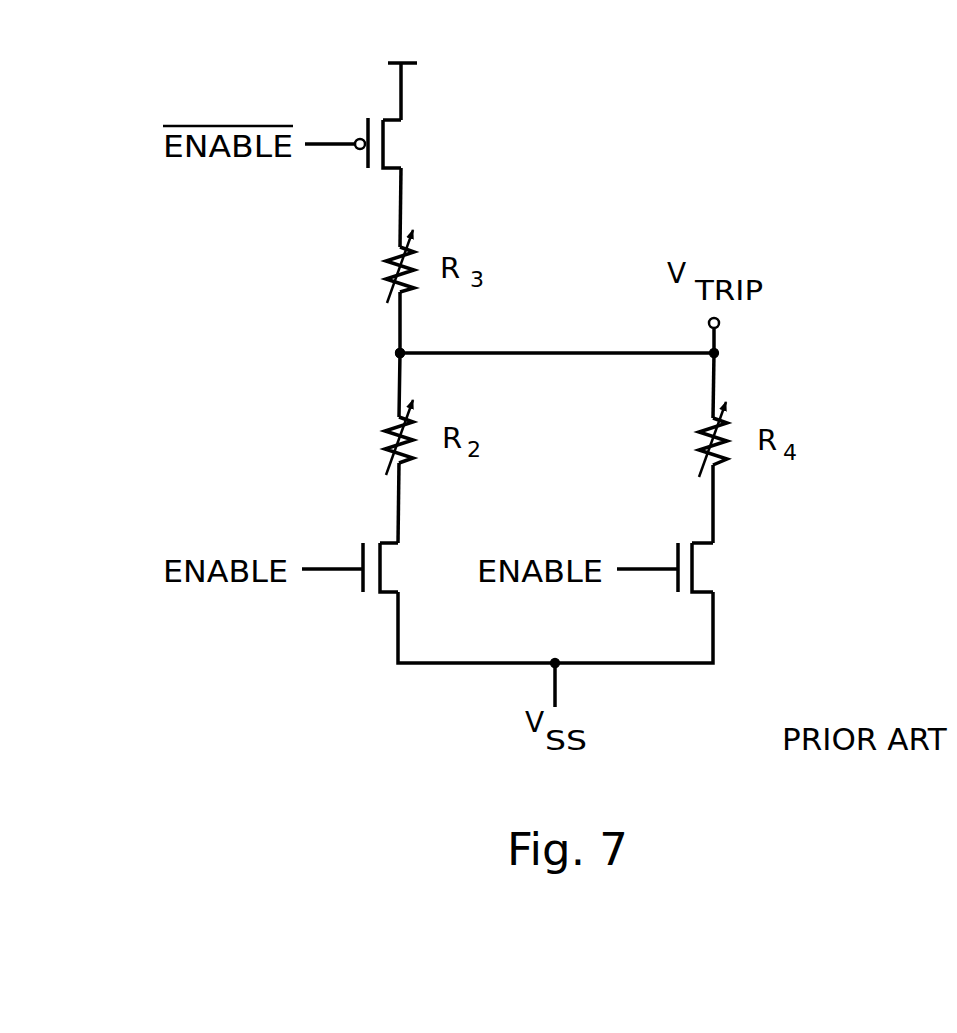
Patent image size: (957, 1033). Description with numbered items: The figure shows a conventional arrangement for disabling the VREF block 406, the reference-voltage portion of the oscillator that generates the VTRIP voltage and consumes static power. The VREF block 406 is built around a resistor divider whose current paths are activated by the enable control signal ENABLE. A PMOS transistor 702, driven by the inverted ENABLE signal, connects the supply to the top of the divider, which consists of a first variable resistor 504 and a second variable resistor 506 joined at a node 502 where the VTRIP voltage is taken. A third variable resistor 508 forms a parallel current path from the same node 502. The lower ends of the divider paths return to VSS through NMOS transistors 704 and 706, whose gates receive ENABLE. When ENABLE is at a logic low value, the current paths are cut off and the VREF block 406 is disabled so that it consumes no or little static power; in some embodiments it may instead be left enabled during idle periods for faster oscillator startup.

The VREF block 406 is at (610, 124).
The transistor 702 is at (393, 123).
The resistor 504 is at (403, 252).
The node 502 is at (400, 353).
The resistor 506 is at (402, 423).
The resistor 508 is at (717, 422).
The transistor 704 is at (392, 595).
The transistor 706 is at (677, 580).